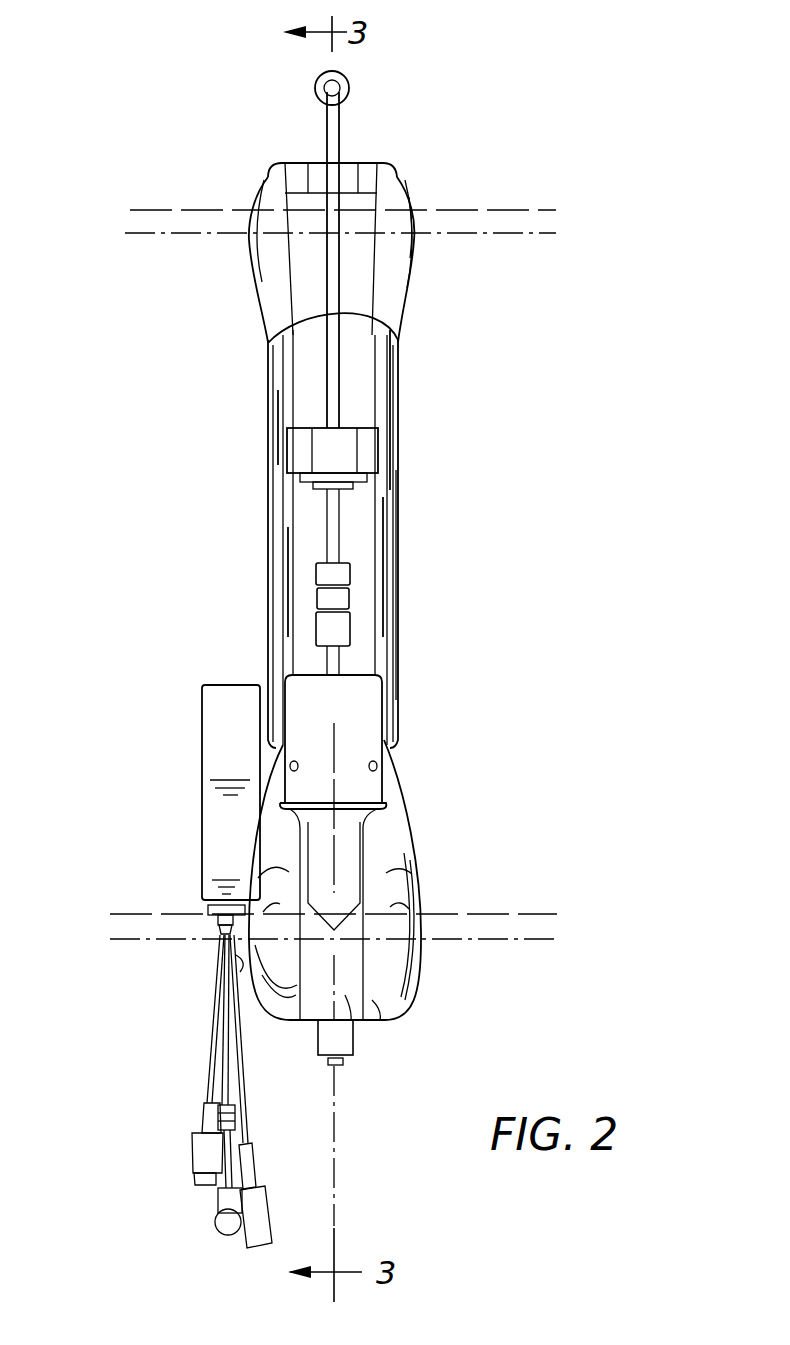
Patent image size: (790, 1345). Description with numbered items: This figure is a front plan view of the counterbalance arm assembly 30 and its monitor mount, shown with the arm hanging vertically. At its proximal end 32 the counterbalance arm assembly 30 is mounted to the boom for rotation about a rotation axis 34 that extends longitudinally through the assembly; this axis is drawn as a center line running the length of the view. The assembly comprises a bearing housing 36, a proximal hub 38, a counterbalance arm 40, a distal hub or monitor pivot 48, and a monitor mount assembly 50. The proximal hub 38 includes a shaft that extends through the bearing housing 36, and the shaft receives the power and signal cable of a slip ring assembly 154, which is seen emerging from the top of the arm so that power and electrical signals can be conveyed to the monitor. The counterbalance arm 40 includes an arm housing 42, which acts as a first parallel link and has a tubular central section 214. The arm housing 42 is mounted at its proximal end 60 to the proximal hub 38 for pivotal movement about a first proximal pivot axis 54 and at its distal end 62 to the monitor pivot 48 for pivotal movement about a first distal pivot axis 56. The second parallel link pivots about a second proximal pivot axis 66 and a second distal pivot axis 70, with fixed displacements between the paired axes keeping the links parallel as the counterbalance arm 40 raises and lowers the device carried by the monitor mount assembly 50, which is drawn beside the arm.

The counterbalance arm assembly 30 is at (128, 148).
The slip ring assembly 154 is at (322, 147).
The distal hub or monitor pivot 48 is at (350, 168).
The distal end of arm housing 62 is at (408, 170).
The second distal pivot axis 70 is at (488, 207).
The first distal pivot axis 56 is at (509, 240).
The counterbalance arm 40 is at (262, 520).
The arm housing 42 is at (270, 570).
The tubular central section 214 is at (397, 576).
The proximal end of counterbalance arm assembly 32 is at (381, 673).
The bearing housing 36 is at (344, 723).
The monitor mount assembly 50 is at (200, 752).
The second proximal pivot axis 66 is at (469, 907).
The first proximal pivot axis 54 is at (525, 945).
The proximal end of arm housing 60 is at (410, 1013).
The proximal hub 38 is at (350, 998).
The rotation axis 34 is at (342, 1118).